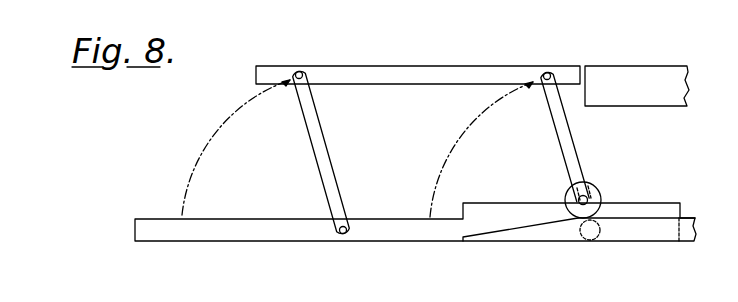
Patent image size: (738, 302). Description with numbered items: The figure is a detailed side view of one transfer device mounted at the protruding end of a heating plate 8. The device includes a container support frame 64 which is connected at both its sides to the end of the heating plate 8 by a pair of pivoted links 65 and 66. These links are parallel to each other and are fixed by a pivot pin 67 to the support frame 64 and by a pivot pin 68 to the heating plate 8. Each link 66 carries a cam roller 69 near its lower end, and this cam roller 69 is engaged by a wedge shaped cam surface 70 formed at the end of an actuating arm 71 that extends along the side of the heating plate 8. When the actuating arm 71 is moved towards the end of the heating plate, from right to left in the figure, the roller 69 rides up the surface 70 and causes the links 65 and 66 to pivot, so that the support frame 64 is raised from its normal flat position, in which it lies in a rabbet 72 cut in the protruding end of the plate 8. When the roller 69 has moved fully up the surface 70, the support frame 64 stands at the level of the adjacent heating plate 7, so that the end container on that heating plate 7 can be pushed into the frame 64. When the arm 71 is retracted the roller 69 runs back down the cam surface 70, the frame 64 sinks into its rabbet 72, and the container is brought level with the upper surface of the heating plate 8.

The heating plate 7 is at (647, 73).
The heating plate 8 is at (653, 208).
The container support frame 64 is at (421, 72).
The pivoted link 65 is at (328, 158).
The pivoted link 66 is at (580, 160).
The pivot pin 67 is at (300, 66).
The pivot pin 68 is at (346, 222).
The cam roller 69 is at (566, 195).
The wedge shaped cam surface 70 is at (524, 222).
The actuating arm 71 is at (690, 215).
The rabbet 72 is at (150, 219).